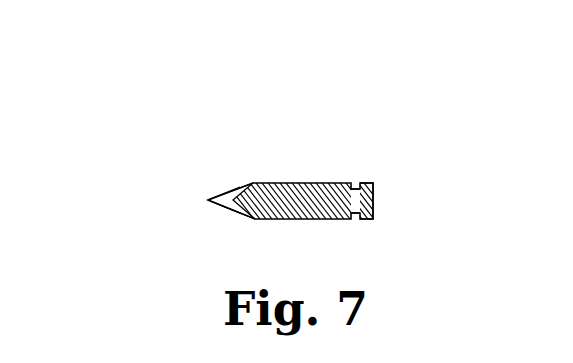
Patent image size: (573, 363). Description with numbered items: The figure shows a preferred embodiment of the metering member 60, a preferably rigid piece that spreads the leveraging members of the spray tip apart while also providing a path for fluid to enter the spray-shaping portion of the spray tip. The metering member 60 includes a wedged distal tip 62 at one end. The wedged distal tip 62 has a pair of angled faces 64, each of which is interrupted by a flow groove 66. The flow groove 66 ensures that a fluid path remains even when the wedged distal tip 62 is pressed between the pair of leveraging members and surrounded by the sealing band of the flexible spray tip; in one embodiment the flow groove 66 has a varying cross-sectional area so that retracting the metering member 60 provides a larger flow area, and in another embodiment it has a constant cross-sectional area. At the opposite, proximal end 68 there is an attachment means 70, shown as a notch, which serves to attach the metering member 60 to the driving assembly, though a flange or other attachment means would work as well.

The metering member 60 is at (259, 193).
The wedged distal tip 62 is at (186, 196).
The angled faces 64 is at (228, 192).
The flow groove 66 is at (240, 190).
The proximal end 68 is at (373, 198).
The attachment means 70 is at (357, 189).